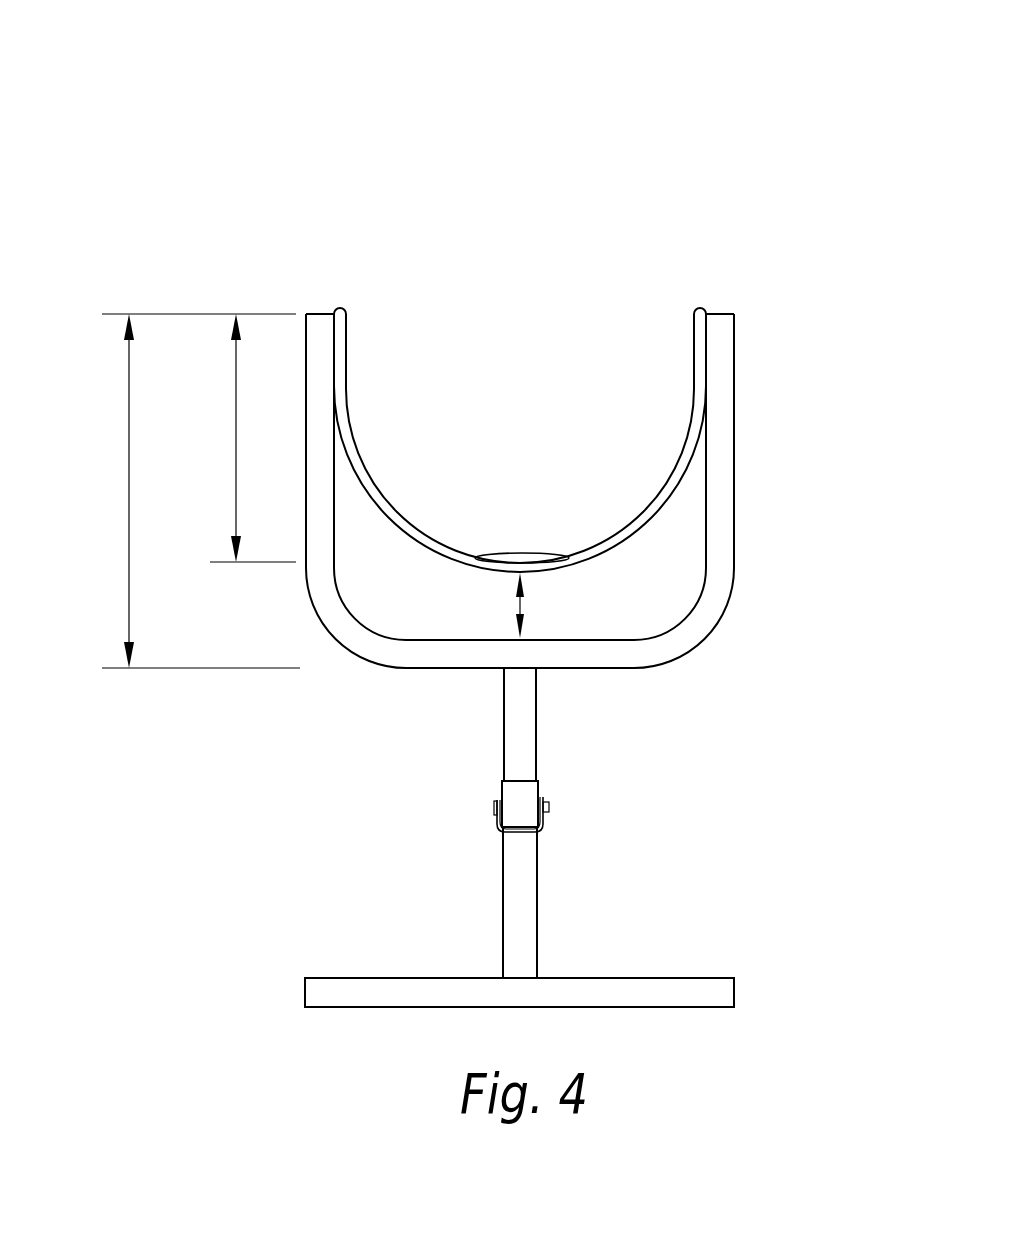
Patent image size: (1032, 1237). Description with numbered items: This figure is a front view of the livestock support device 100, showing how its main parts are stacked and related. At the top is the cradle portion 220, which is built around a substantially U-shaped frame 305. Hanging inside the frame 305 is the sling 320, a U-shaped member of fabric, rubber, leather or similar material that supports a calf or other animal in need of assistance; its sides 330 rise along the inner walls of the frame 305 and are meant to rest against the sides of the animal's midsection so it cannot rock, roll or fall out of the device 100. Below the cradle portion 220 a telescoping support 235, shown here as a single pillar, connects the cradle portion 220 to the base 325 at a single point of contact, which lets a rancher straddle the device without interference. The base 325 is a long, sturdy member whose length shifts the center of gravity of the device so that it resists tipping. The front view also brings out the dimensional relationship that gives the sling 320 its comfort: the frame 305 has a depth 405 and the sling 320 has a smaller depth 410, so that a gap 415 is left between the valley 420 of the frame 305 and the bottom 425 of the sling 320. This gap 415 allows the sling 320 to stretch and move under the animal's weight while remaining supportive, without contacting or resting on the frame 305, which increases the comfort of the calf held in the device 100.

The livestock support device 100 is at (798, 140).
The frame 305 is at (733, 353).
The cradle portion 220 is at (733, 520).
The sides 330 is at (347, 360).
The sling 320 is at (424, 531).
The bottom 425 is at (455, 562).
The valley 420 is at (582, 670).
The telescoping support 235 is at (537, 853).
The base 325 is at (710, 978).
The depth 405 is at (129, 535).
The depth 410 is at (236, 498).
The gap 415 is at (522, 600).